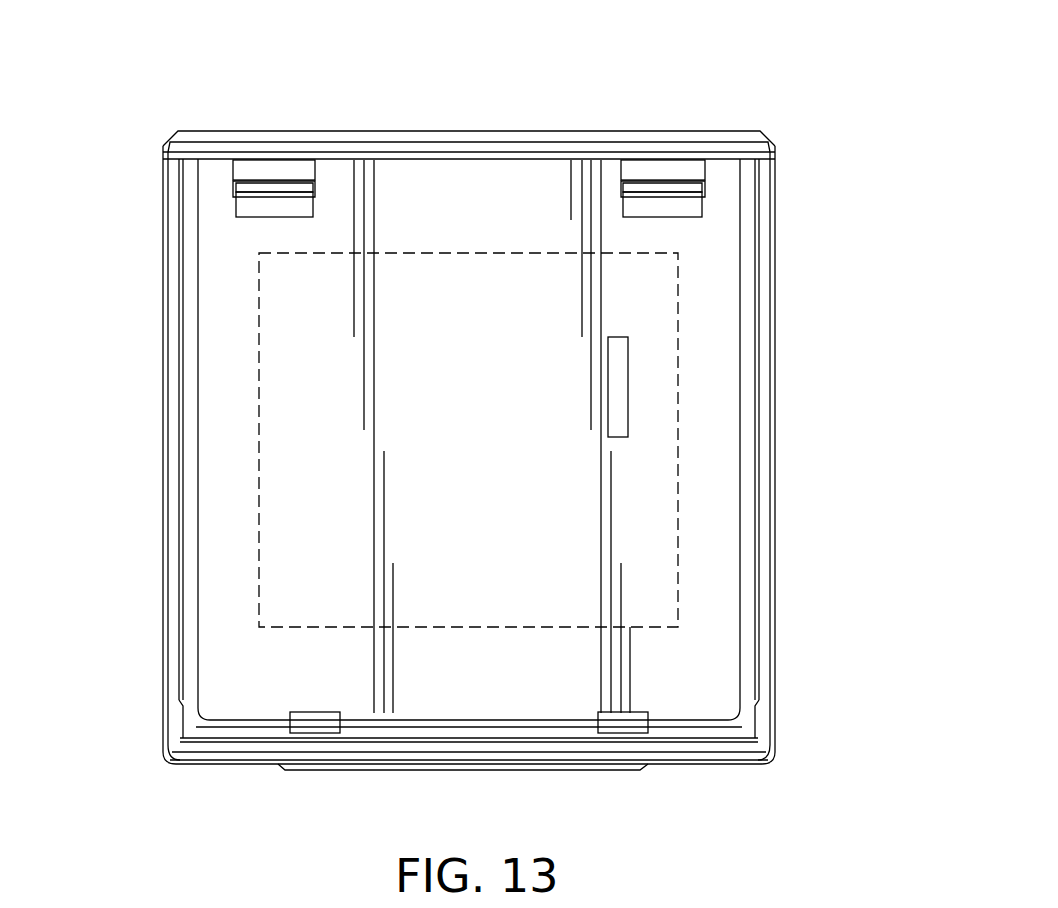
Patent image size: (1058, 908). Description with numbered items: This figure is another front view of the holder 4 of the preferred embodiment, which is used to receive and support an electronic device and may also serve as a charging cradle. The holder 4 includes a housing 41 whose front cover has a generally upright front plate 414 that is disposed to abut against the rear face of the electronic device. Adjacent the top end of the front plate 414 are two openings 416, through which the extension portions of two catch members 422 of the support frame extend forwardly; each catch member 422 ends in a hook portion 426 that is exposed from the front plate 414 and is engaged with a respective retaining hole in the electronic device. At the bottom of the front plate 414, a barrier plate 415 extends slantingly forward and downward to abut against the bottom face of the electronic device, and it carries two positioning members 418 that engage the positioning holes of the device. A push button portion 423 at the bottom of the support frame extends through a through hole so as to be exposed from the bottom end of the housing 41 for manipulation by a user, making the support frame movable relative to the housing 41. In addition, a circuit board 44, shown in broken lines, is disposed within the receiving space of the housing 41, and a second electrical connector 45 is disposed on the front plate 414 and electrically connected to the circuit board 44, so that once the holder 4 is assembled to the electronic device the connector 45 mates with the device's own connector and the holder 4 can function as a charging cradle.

The holder 4 is at (834, 126).
The housing 41 is at (148, 126).
The front plate 414 is at (695, 405).
The barrier plate 415 is at (750, 731).
The openings 416 is at (250, 186).
The positioning members 418 is at (327, 726).
The catch members 422 is at (262, 164).
The push button portion 423 is at (633, 770).
The hook portion 426 is at (256, 205).
The circuit board 44 is at (680, 526).
The second electrical connector 45 is at (626, 356).